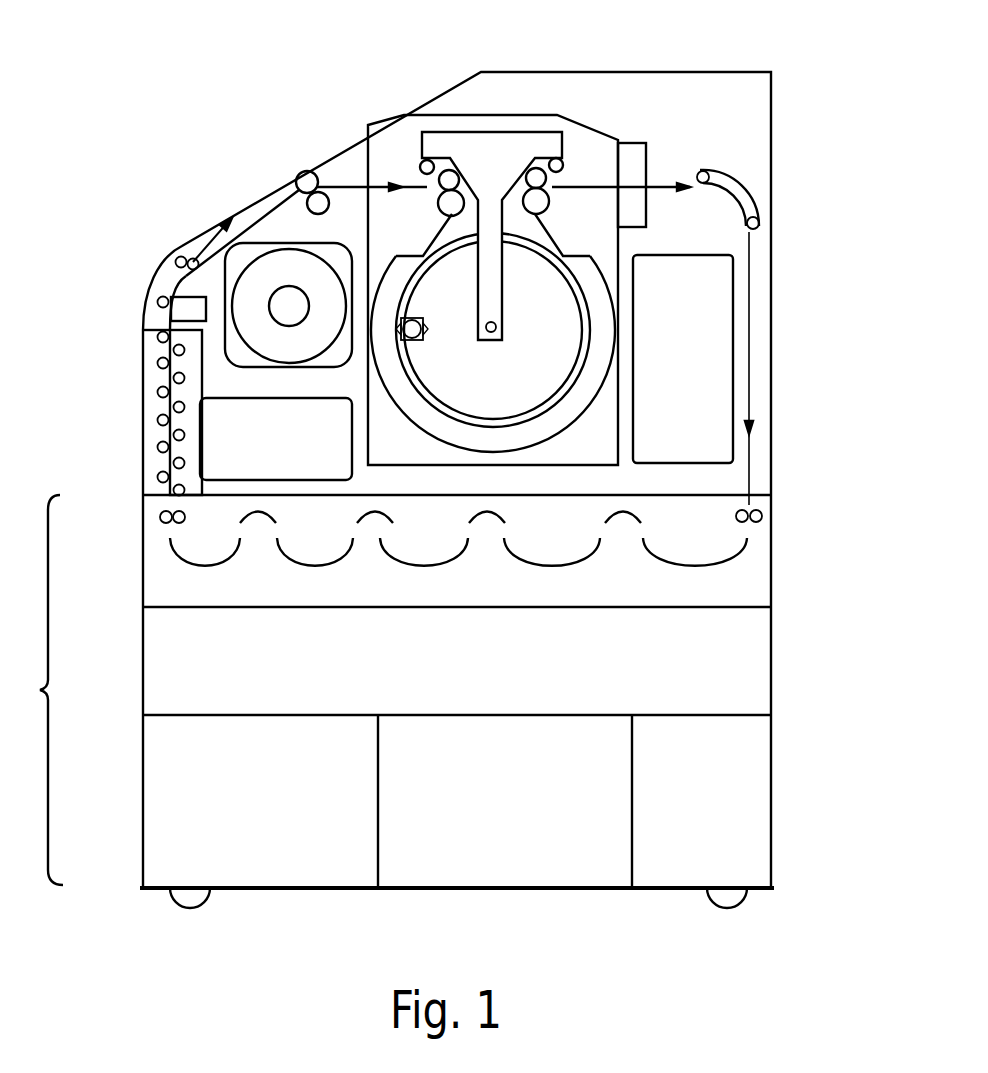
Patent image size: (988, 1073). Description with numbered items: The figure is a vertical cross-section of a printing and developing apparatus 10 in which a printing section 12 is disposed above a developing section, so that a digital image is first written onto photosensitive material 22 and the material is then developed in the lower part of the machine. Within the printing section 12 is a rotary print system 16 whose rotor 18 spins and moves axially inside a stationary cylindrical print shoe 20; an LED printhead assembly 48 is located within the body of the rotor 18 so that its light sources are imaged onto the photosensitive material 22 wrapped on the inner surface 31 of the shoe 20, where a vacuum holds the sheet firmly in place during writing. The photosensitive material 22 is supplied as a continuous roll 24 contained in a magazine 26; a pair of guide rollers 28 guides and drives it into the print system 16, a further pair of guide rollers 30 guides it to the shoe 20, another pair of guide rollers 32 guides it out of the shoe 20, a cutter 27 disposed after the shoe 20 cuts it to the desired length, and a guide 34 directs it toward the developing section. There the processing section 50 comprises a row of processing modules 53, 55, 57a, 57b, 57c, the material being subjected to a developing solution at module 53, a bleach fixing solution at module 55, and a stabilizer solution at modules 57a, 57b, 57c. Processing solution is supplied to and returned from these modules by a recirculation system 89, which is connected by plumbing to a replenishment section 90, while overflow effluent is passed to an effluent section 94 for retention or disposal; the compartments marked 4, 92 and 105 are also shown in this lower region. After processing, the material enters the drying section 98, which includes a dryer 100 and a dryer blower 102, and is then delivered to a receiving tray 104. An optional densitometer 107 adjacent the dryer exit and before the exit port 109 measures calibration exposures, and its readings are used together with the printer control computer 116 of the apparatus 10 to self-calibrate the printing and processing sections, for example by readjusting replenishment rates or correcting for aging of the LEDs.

The lower processing section 4 is at (38, 690).
The printing and developing apparatus 10 is at (788, 150).
The printing section 12 is at (774, 69).
The rotary print system 16 is at (583, 140).
The rotor 18 is at (556, 324).
The print shoe 20 is at (436, 411).
The photosensitive material 22 is at (350, 190).
The continuous roll 24 is at (283, 260).
The magazine 26 is at (252, 247).
The cutter 27 is at (646, 210).
The guide rollers 28 is at (304, 172).
The guide rollers 30 is at (404, 120).
The inner surface 31 is at (415, 382).
The guide rollers 32 is at (548, 204).
The guide 34 is at (748, 190).
The LED printhead assembly 48 is at (417, 322).
The processing section 50 is at (138, 590).
The processing module 53 is at (700, 566).
The processing module 55 is at (562, 566).
The processing module 57a is at (432, 566).
The processing module 57b is at (323, 566).
The processing module 57c is at (214, 566).
The recirculation system 89 is at (667, 680).
The replenishment section 90 is at (272, 842).
The lower cabinet 92 is at (753, 662).
The effluent section 94 is at (510, 842).
The drying section 98 is at (150, 423).
The dryer 100 is at (163, 447).
The dryer blower 102 is at (324, 427).
The receiving tray 104 is at (197, 256).
The compartment 105 is at (716, 842).
The densitometer 107 is at (206, 322).
The exit port 109 is at (196, 257).
The printer control computer 116 is at (715, 338).